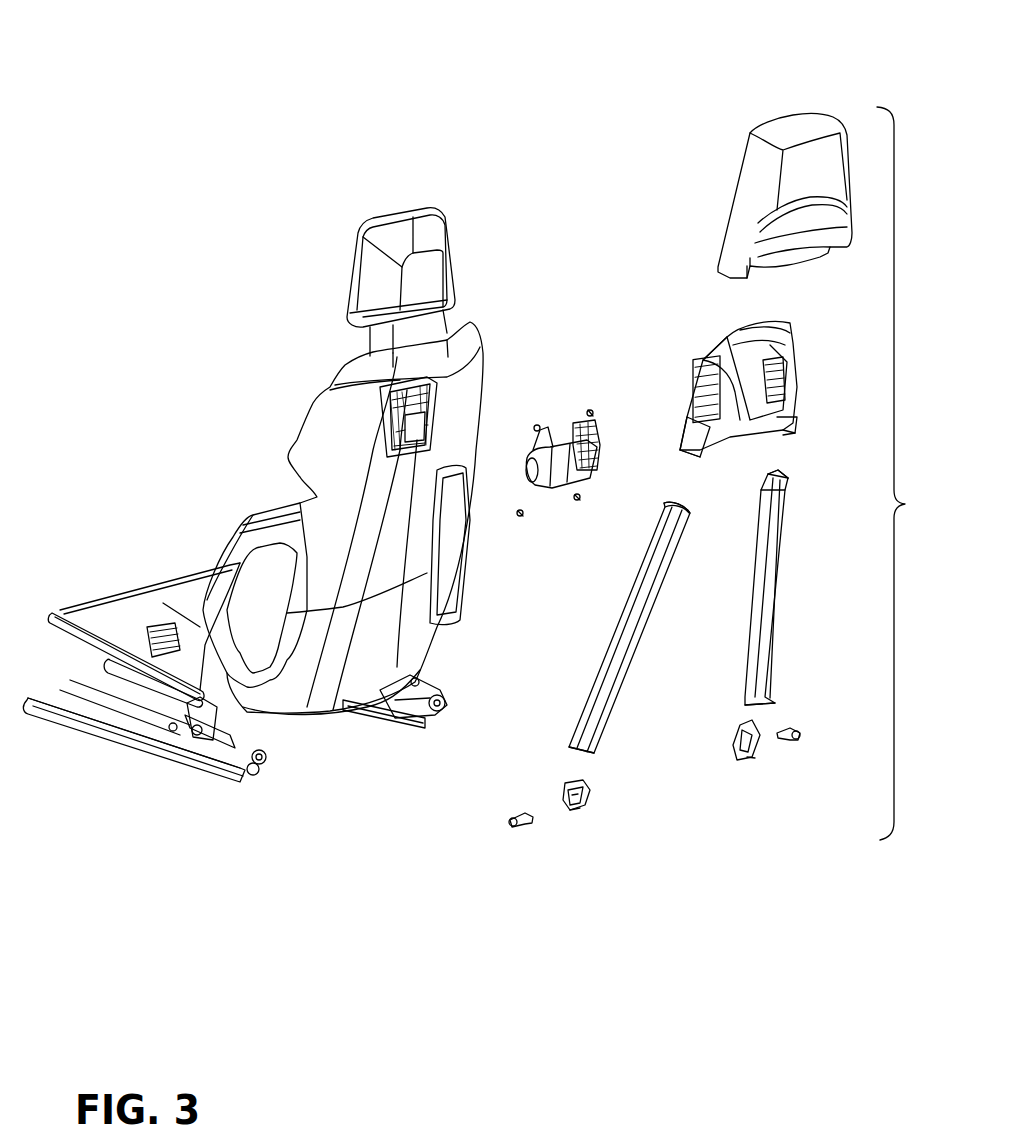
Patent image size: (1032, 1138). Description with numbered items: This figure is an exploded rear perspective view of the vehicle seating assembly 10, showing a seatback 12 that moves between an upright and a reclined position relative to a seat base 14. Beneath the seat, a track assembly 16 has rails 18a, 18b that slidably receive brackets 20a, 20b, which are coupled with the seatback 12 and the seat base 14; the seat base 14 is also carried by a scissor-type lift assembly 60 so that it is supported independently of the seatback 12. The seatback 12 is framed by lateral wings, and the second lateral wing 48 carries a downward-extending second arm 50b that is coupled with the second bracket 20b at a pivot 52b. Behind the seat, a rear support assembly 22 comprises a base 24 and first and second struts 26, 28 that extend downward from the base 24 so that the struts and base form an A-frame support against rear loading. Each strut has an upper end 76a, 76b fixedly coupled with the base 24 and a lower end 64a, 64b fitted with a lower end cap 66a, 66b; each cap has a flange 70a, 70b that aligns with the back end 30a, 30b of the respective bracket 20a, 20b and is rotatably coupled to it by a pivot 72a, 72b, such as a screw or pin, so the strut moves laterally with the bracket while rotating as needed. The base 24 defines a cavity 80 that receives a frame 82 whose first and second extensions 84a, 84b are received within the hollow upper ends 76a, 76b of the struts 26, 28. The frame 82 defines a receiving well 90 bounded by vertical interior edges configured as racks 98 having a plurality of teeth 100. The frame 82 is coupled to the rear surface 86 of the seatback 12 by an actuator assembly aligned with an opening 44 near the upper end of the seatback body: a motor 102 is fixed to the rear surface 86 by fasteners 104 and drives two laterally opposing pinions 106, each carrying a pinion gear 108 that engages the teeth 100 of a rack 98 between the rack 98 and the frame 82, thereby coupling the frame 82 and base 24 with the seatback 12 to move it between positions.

The vehicle seating assembly 10 is at (785, 47).
The seatback 12 is at (343, 461).
The seat base 14 is at (150, 603).
The track assembly 16 is at (48, 728).
The rail 18a is at (377, 713).
The rail 18b is at (72, 722).
The bracket 20a is at (393, 707).
The bracket 20b is at (210, 722).
The rear support assembly 22 is at (906, 473).
The base 24 is at (793, 187).
The first strut 26 is at (777, 617).
The second strut 28 is at (627, 613).
The back end of bracket 30a is at (443, 705).
The back end of bracket 30b is at (246, 775).
The opening 44 is at (440, 410).
The second lateral wing 48 is at (250, 565).
The second arm 50b is at (217, 712).
The pivot 52b is at (173, 730).
The lift assembly 60 is at (80, 670).
The lower end of strut 64a is at (770, 703).
The lower end of strut 64b is at (570, 748).
The lower end cap 66a is at (743, 725).
The lower end cap 66b is at (590, 783).
The flange 70a is at (747, 760).
The flange 70b is at (577, 803).
The pivot 72a is at (800, 737).
The pivot 72b is at (527, 823).
The upper end of strut 76a is at (790, 473).
The upper end of strut 76b is at (670, 503).
The cavity 80 is at (757, 178).
The frame 82 is at (793, 410).
The first extension 84a is at (790, 440).
The second extension 84b is at (683, 467).
The rear surface 86 is at (402, 492).
The receiving well 90 is at (750, 393).
The rack 98 is at (787, 362).
The teeth 100 is at (777, 380).
The motor 102 is at (552, 482).
The fasteners 104 is at (590, 410).
The pinions 106 is at (597, 447).
The pinion gear 108 is at (597, 457).